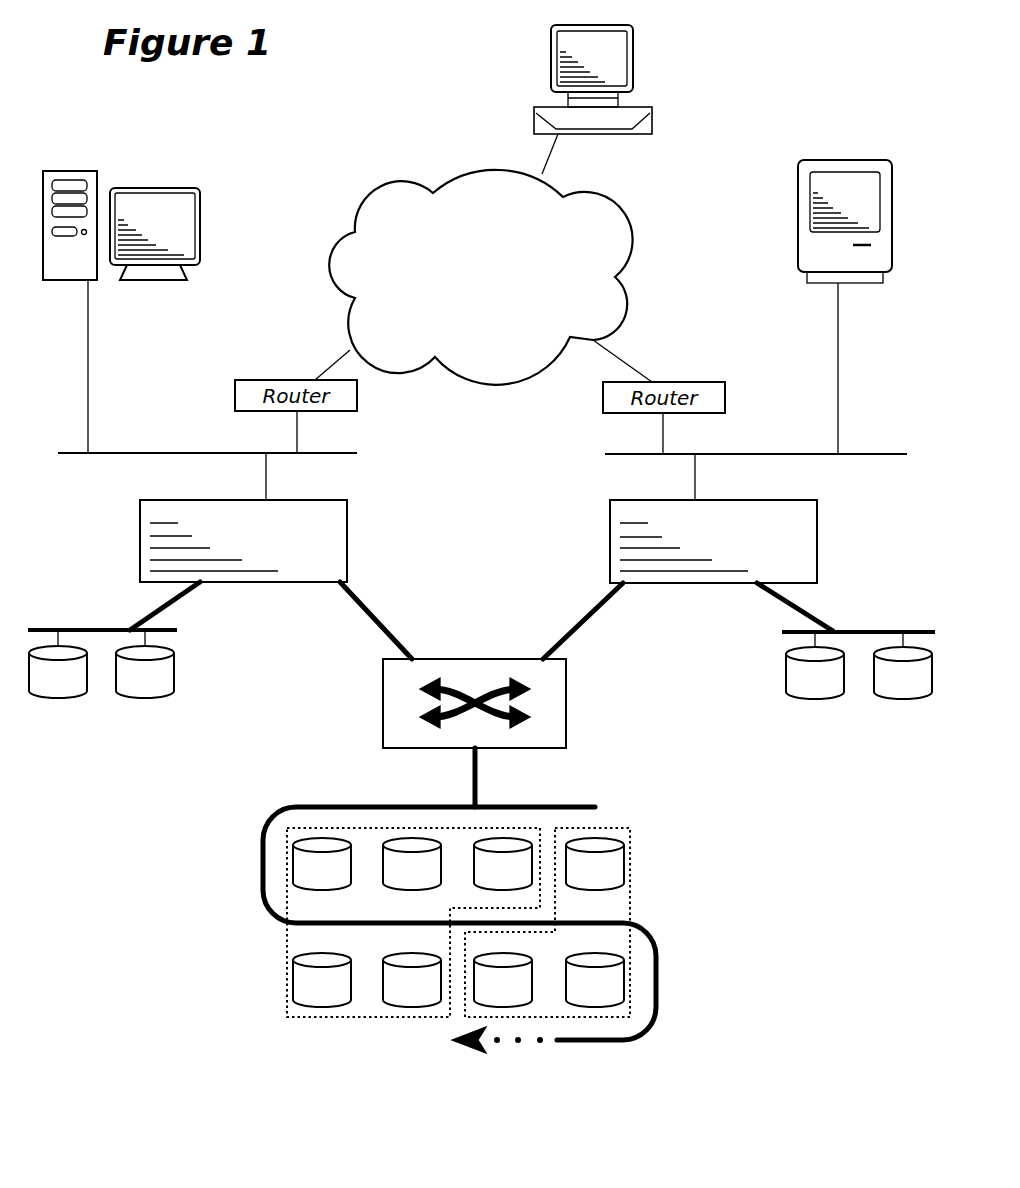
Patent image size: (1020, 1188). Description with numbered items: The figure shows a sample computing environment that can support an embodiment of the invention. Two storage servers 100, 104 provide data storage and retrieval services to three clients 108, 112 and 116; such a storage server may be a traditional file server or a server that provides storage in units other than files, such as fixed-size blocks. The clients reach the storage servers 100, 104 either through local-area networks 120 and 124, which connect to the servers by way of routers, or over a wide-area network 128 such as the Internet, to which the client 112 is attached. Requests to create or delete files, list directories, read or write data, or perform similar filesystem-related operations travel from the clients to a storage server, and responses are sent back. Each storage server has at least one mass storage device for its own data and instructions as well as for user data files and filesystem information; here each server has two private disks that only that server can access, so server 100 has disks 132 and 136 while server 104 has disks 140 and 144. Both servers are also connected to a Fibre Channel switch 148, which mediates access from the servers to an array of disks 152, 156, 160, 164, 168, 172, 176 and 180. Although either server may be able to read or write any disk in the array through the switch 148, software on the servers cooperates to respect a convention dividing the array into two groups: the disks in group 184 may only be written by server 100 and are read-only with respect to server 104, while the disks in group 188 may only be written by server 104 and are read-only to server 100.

The storage server 100 is at (243, 541).
The storage server 104 is at (713, 541).
The client 108 is at (121, 238).
The client 112 is at (593, 91).
The client 116 is at (845, 233).
The local-area network 120 is at (207, 464).
The local-area network 124 is at (756, 465).
The wide-area network 128 is at (480, 277).
The disk 132 is at (58, 664).
The disk 136 is at (145, 664).
The disk 140 is at (815, 666).
The disk 144 is at (903, 666).
The Fibre Channel switch 148 is at (474, 703).
The disk 152 is at (322, 864).
The disk 156 is at (412, 864).
The disk 160 is at (503, 864).
The disk 164 is at (595, 864).
The disk 168 is at (322, 980).
The disk 172 is at (412, 980).
The disk 176 is at (503, 980).
The disk 180 is at (595, 980).
The disk group 184 is at (287, 1017).
The disk group 188 is at (630, 907).